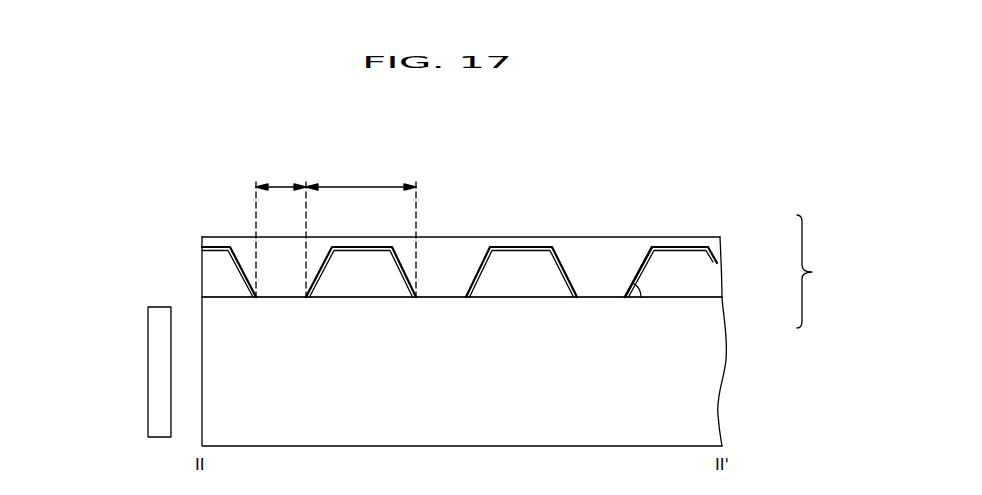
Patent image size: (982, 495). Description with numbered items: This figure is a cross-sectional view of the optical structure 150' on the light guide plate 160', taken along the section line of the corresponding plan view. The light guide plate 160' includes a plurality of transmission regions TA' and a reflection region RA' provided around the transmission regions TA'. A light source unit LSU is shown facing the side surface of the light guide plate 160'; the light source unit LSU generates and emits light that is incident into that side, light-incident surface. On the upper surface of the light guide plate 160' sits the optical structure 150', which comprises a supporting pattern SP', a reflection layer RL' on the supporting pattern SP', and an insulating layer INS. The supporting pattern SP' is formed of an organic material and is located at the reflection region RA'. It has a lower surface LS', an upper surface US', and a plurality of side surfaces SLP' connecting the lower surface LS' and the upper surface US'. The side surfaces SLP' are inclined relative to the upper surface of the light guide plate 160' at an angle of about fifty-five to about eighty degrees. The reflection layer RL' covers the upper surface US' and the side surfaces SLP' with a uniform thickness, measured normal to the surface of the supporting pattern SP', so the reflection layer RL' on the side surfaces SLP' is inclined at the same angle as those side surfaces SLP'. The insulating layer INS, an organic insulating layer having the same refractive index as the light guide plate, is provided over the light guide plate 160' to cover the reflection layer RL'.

The transmission region TA' is at (281, 230).
The reflection region RA' is at (361, 230).
The side surface SLP' is at (632, 244).
The upper surface US' is at (680, 219).
The insulating layer INS is at (720, 239).
The reflection layer RL' is at (494, 272).
The optical structure 150' is at (824, 271).
The supporting pattern SP' is at (494, 307).
The lower surface LS' is at (494, 327).
The light guide plate 160' is at (493, 341).
The light source unit LSU is at (158, 369).